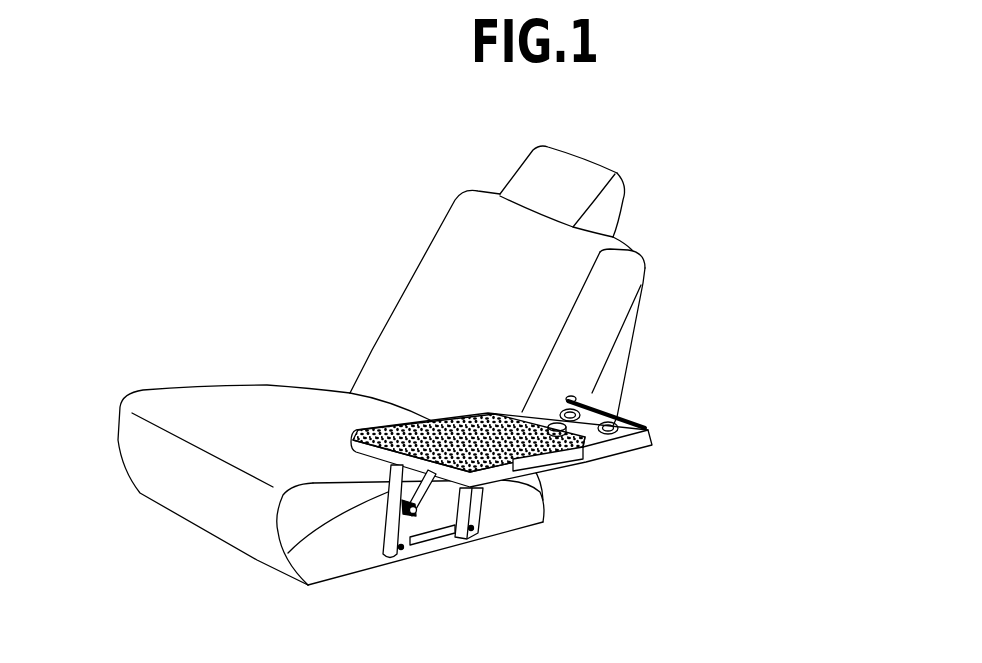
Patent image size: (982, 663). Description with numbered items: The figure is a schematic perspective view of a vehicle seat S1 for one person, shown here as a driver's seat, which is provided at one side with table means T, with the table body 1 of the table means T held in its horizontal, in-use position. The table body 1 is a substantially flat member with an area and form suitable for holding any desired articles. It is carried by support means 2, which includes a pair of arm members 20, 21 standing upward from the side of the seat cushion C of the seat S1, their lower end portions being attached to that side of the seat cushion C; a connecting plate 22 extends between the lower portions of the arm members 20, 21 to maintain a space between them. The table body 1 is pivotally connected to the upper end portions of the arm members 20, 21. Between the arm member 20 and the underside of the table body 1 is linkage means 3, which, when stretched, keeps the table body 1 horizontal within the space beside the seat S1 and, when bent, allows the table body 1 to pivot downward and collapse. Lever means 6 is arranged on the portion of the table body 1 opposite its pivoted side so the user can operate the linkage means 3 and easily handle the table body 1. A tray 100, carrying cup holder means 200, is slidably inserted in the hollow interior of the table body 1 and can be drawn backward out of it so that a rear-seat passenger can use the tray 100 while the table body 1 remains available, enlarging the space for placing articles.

The table body 1 is at (485, 393).
The support means 2 is at (386, 564).
The linkage means 3 is at (405, 512).
The lever means 6 is at (535, 470).
The arm member 20 is at (388, 548).
The arm member 21 is at (477, 512).
The connecting plate 22 is at (423, 547).
The tray 100 is at (544, 364).
The cup holder means 200 is at (587, 397).
The seat cushion C is at (280, 405).
The vehicle seat S1 is at (381, 341).
The table means T is at (498, 452).